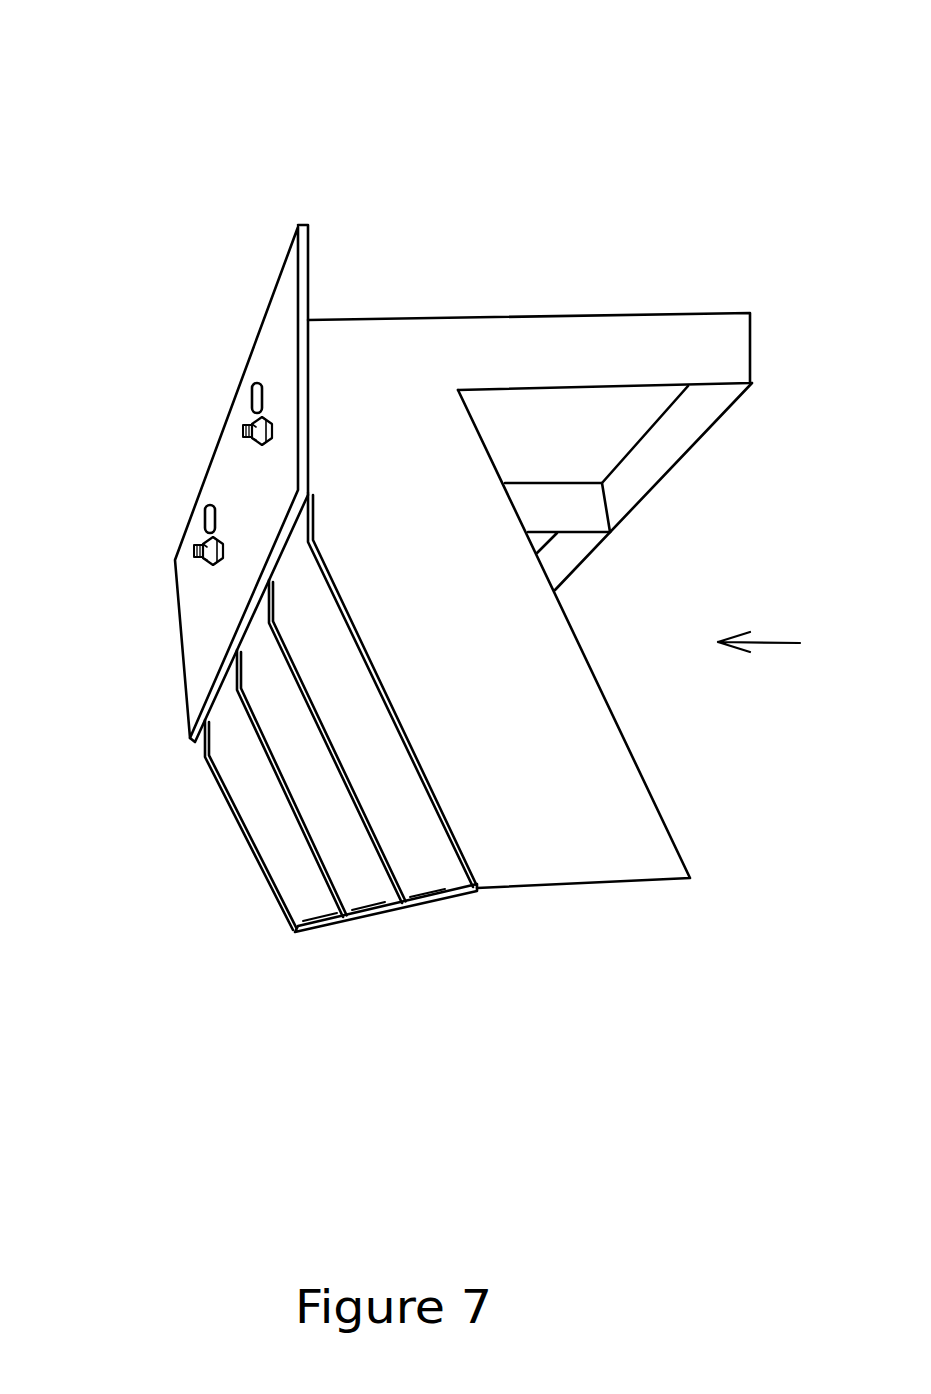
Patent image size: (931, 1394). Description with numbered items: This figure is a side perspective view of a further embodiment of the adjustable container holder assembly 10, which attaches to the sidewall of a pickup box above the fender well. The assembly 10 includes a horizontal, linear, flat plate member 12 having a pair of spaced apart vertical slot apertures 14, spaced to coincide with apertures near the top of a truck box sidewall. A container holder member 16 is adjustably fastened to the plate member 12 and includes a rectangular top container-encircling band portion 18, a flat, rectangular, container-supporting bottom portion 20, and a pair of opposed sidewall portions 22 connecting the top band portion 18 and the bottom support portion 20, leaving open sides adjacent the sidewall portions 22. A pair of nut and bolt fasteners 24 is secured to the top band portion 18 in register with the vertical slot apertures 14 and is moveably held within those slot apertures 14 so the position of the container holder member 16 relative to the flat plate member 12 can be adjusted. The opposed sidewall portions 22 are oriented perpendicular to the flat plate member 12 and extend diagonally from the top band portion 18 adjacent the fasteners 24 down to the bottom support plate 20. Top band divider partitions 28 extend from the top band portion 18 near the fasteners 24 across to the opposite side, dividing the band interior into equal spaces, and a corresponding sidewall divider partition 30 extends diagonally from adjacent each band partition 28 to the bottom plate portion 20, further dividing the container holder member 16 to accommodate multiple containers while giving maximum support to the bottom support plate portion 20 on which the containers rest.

The adjustable container holder assembly 10 is at (438, 112).
The flat plate member 12 is at (270, 358).
The vertical slot apertures 14 is at (193, 527).
The container holder member 16 is at (777, 648).
The top container-encircling band portion 18 is at (380, 355).
The bottom support portion 20 is at (363, 922).
The opposed sidewall portions 22 is at (558, 750).
The nut and bolt fasteners 24 is at (240, 437).
The top band divider partitions 28 is at (577, 503).
The sidewall divider partition 30 is at (387, 805).